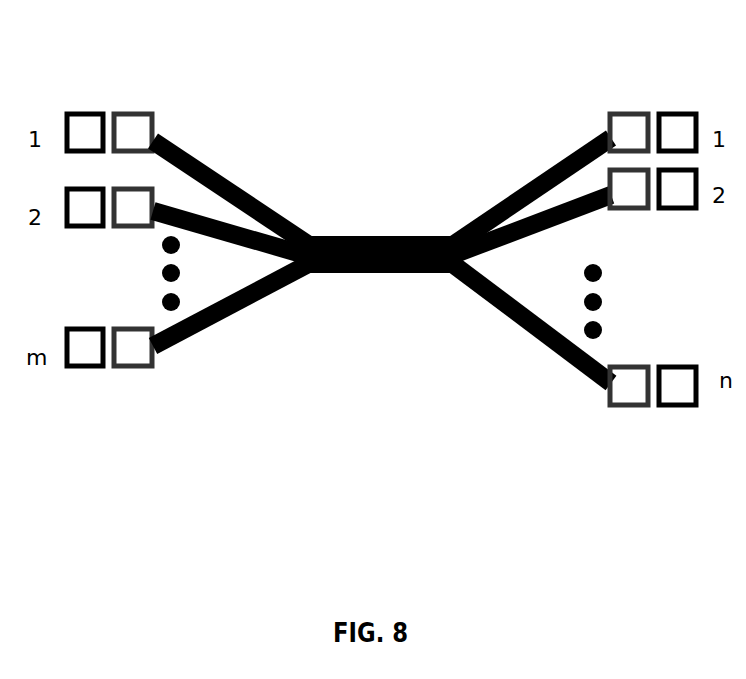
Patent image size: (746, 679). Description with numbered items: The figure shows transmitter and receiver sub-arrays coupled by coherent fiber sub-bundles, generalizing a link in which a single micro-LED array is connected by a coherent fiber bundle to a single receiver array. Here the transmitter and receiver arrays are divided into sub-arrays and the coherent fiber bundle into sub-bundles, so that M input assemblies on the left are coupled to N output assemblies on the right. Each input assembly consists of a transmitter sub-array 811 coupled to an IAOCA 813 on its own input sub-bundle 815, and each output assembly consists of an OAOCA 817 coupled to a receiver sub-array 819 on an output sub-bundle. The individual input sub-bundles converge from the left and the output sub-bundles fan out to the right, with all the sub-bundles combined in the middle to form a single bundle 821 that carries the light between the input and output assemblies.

The transmitter sub-array 811 is at (90, 112).
The IAOCA 813 is at (133, 112).
The input sub-bundle 815 is at (238, 188).
The OAOCA 817 is at (627, 112).
The receiver sub-array 819 is at (677, 112).
The bundle 821 is at (395, 234).